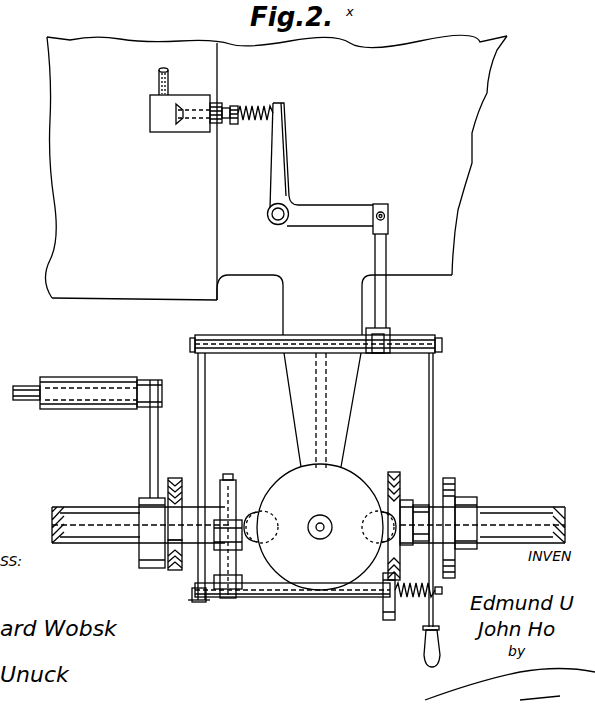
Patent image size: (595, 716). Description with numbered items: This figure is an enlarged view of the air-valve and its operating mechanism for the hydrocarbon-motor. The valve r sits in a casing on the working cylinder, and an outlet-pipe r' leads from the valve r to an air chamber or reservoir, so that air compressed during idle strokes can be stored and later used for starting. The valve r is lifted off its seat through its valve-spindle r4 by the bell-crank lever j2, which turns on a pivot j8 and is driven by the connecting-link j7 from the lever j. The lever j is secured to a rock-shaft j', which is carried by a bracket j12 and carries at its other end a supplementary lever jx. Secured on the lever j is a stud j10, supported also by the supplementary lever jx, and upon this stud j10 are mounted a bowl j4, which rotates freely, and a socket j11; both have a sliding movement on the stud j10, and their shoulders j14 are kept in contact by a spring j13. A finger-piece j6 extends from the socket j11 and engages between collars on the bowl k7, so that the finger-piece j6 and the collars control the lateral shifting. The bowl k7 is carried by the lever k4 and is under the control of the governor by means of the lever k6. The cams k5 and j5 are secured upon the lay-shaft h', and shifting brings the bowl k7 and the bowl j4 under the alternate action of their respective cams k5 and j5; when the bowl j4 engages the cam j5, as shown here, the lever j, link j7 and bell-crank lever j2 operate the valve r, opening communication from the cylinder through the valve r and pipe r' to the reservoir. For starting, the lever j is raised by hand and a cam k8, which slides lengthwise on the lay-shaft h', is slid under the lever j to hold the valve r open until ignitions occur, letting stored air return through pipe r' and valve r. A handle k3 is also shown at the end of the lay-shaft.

The valve r is at (194, 124).
The outlet-pipe r' is at (147, 81).
The valve-spindle r4 is at (253, 108).
The bell-crank lever j2 is at (282, 166).
The pivot j8 is at (270, 216).
The connecting-link j7 is at (388, 303).
The rock-shaft j' is at (313, 344).
The bracket j12 is at (282, 354).
The supplementary lever jx is at (203, 420).
The lever j is at (418, 510).
The socket j11 is at (299, 590).
The stud j10 is at (194, 596).
The shoulders j14 is at (356, 592).
The finger-piece j6 is at (270, 555).
The lay-shaft h' is at (308, 544).
The cylinder k3 is at (30, 395).
The lever k4 is at (152, 442).
The cam k5 is at (189, 474).
The bowl k7 is at (178, 571).
The lever k6 is at (241, 496).
The cam j5 is at (388, 478).
The bowl j4 is at (392, 600).
The spring j13 is at (406, 598).
The cam k8 is at (456, 482).